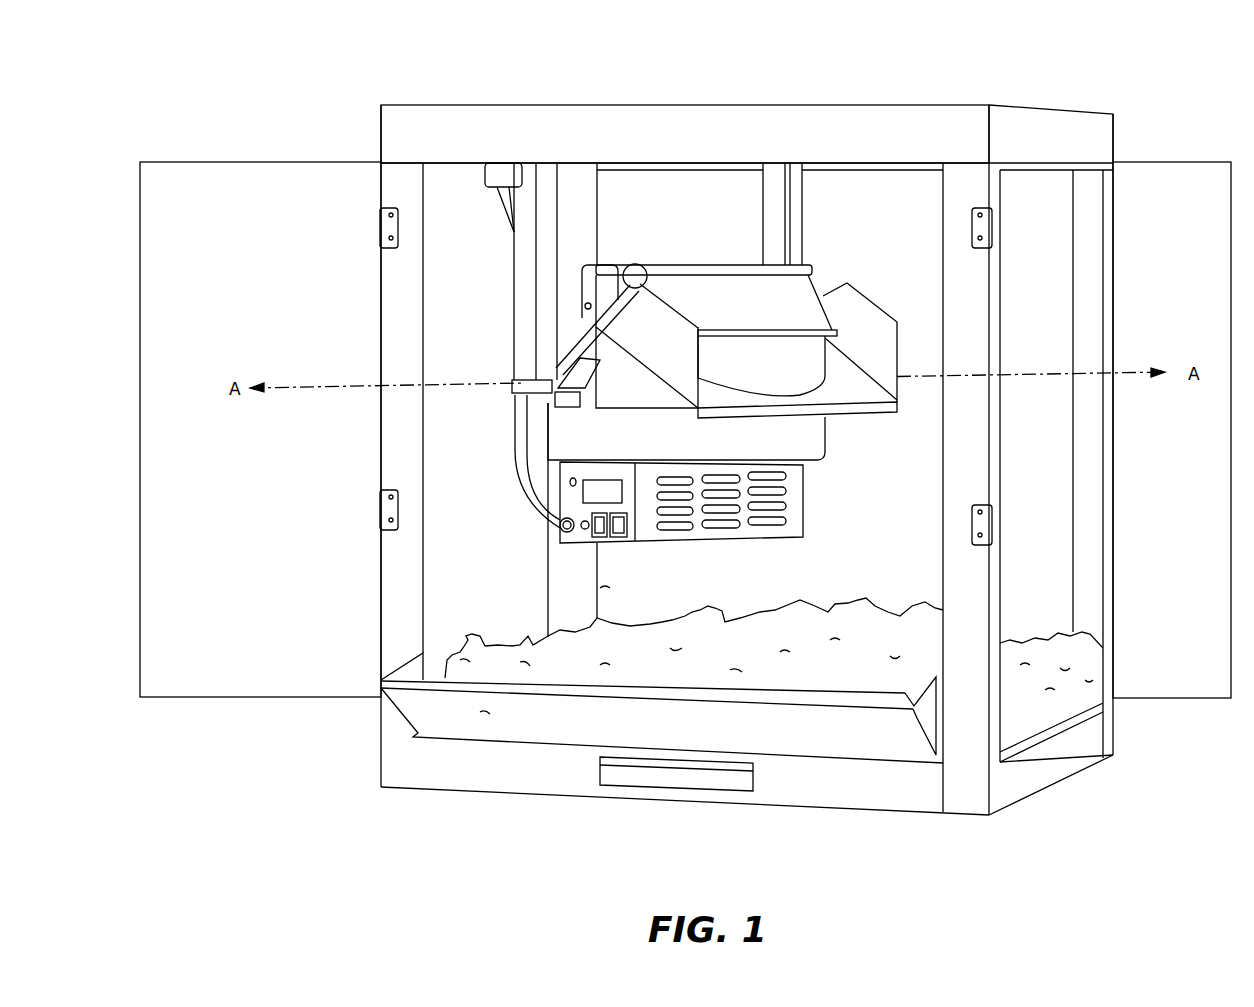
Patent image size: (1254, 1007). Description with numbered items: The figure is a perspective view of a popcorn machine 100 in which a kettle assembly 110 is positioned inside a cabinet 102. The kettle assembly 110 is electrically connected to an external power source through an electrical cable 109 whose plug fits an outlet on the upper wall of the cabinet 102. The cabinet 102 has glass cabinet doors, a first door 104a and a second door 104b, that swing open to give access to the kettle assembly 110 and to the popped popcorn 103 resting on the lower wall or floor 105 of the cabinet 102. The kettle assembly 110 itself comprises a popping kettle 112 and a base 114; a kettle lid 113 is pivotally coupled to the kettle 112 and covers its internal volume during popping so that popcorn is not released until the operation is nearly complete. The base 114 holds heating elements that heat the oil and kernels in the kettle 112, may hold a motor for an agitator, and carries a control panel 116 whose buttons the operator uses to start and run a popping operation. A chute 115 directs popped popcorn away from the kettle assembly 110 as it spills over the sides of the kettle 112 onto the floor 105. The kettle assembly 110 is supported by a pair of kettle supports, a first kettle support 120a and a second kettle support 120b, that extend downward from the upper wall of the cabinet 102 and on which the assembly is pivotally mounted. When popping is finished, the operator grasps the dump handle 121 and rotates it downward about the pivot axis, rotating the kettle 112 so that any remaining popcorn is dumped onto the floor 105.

The popcorn machine 100 is at (153, 104).
The cabinet 102 is at (933, 110).
The popped popcorn 103 is at (873, 625).
The first door 104a is at (258, 180).
The second door 104b is at (1175, 178).
The floor 105 is at (1027, 737).
The electrical cable 109 is at (518, 462).
The kettle assembly 110 is at (722, 243).
The popping kettle 112 is at (808, 430).
The kettle lid 113 is at (795, 300).
The base 114 is at (797, 487).
The chute 115 is at (875, 340).
The control panel 116 is at (583, 535).
The first kettle support 120a is at (530, 266).
The second kettle support 120b is at (797, 210).
The dump handle 121 is at (600, 337).